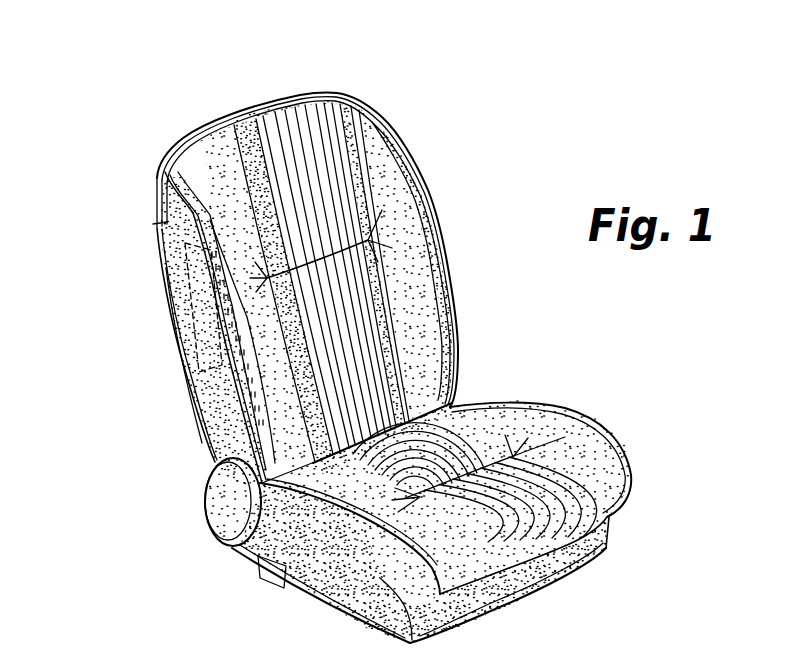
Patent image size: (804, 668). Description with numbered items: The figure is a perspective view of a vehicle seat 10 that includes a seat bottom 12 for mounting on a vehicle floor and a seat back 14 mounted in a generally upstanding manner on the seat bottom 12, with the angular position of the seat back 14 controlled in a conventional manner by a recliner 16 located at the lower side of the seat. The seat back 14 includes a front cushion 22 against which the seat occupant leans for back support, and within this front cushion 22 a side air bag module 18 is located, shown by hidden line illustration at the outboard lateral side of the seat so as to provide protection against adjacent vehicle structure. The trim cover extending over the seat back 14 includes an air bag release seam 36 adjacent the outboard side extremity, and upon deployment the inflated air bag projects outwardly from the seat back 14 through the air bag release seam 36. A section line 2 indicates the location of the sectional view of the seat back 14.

The section line 2- 2 is at (380, 58).
The vehicle seat 10 is at (150, 391).
The seat bottom 12 is at (610, 420).
The seat back 14 is at (445, 210).
The recliner 16 is at (213, 525).
The side air bag module 18 is at (198, 307).
The front cushion 22 is at (453, 280).
The air bag release seam 36 is at (258, 343).